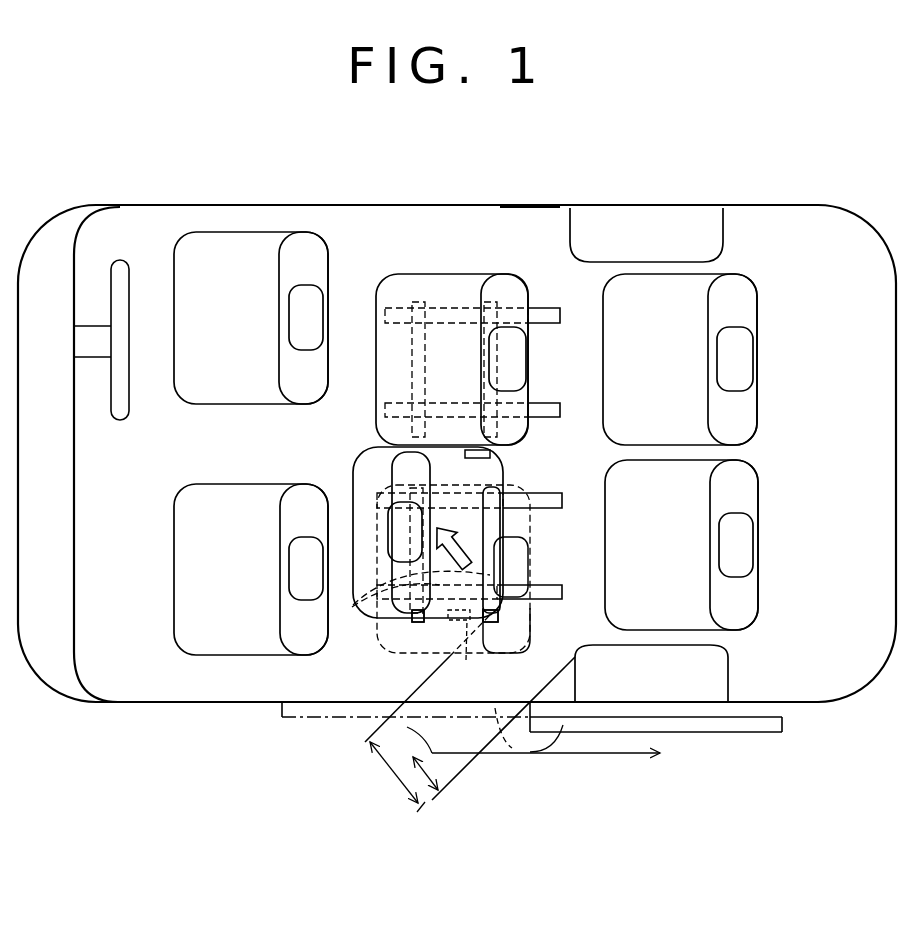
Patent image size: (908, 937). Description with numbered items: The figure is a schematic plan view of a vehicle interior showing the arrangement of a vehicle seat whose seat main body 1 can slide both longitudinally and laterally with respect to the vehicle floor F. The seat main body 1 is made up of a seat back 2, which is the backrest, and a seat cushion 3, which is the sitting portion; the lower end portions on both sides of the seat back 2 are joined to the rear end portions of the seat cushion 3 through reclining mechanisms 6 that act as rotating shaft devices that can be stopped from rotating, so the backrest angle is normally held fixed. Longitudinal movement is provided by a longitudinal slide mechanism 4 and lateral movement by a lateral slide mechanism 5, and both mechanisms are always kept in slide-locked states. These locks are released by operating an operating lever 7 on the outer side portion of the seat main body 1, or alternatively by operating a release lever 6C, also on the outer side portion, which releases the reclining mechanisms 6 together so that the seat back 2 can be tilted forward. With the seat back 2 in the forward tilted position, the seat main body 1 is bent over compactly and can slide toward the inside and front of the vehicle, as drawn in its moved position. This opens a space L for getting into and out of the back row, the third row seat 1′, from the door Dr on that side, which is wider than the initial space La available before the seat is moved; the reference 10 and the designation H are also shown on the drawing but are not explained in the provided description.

The seat main body 1 is at (517, 500).
The third row seat 1′ is at (747, 290).
The seat back 2 is at (443, 470).
The seat cushion 3 is at (373, 465).
The longitudinal slide mechanism 4 is at (562, 500).
The lateral slide mechanism 5 is at (362, 600).
The reclining mechanism 6 is at (493, 468).
The release lever 6C is at (468, 658).
The operating lever 7 is at (415, 622).
The bracket members 10 is at (455, 616).
The vehicle floor F is at (503, 222).
The rear bench seats H is at (643, 222).
The space L is at (393, 775).
The initial space La is at (428, 790).
The door Dr is at (510, 755).